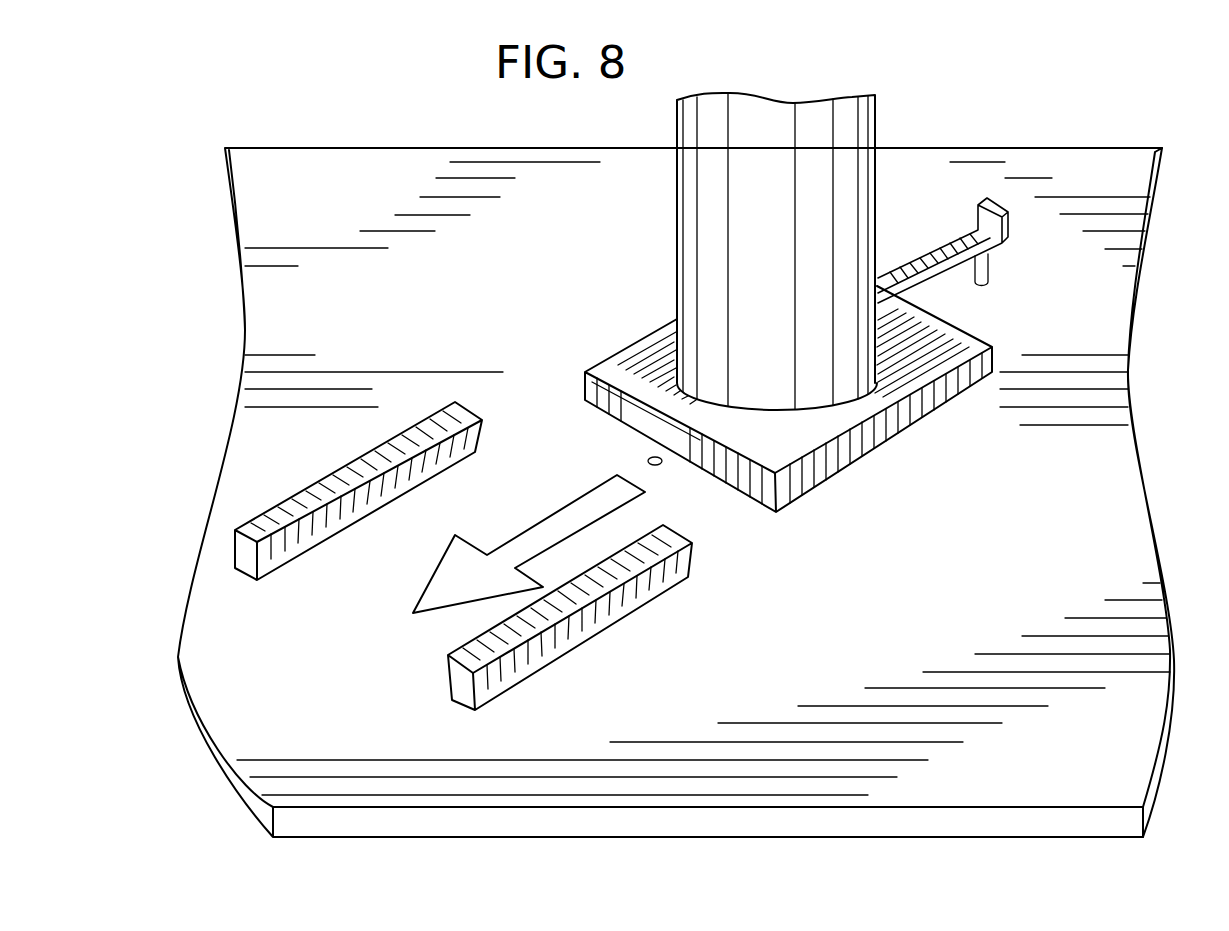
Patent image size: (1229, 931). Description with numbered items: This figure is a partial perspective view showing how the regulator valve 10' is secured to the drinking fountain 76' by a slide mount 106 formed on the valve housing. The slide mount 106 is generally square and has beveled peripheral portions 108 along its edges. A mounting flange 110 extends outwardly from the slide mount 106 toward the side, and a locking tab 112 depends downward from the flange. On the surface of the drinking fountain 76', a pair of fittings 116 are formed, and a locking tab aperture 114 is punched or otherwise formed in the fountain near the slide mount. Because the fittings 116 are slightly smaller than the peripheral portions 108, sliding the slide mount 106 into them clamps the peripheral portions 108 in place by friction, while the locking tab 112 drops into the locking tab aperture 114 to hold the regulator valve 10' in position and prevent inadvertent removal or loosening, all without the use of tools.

The regulator valve 10' is at (712, 251).
The drinking fountain 76' is at (1163, 492).
The slide mount 106 is at (1088, 313).
The peripheral portions 108 is at (581, 358).
The mounting flange 110 is at (959, 190).
The locking tab 112 is at (989, 273).
The locking tab aperture 114 is at (660, 465).
The fitting 116 is at (242, 552).